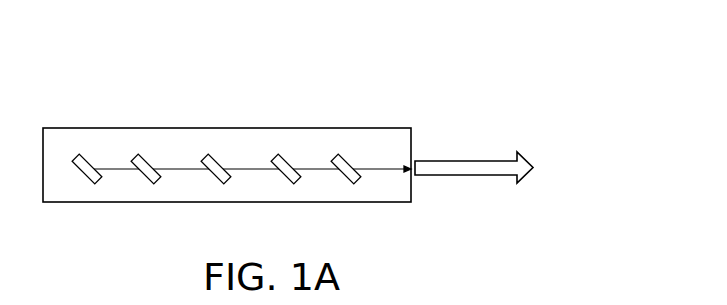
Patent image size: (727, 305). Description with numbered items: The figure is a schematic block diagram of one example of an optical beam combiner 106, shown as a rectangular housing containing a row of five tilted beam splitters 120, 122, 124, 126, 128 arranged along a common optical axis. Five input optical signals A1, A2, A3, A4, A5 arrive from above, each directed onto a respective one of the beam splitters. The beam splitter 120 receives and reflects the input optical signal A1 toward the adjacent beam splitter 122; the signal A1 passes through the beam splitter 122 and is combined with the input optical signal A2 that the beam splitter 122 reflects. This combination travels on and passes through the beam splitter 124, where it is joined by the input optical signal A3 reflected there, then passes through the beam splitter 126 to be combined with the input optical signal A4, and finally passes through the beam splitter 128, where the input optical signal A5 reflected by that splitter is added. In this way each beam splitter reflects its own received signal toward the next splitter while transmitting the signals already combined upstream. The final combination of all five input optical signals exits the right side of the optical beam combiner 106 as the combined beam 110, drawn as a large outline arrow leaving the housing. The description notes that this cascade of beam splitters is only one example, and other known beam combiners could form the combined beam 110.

The optical beam combiner 106 is at (415, 121).
The combined beam 110 is at (468, 180).
The beam splitter 120 is at (82, 187).
The beam splitter 122 is at (142, 189).
The beam splitter 124 is at (210, 189).
The beam splitter 126 is at (280, 189).
The beam splitter 128 is at (340, 189).
The input optical signal A1 is at (88, 152).
The input optical signal A2 is at (152, 152).
The input optical signal A3 is at (220, 152).
The input optical signal A4 is at (288, 152).
The input optical signal A5 is at (348, 152).